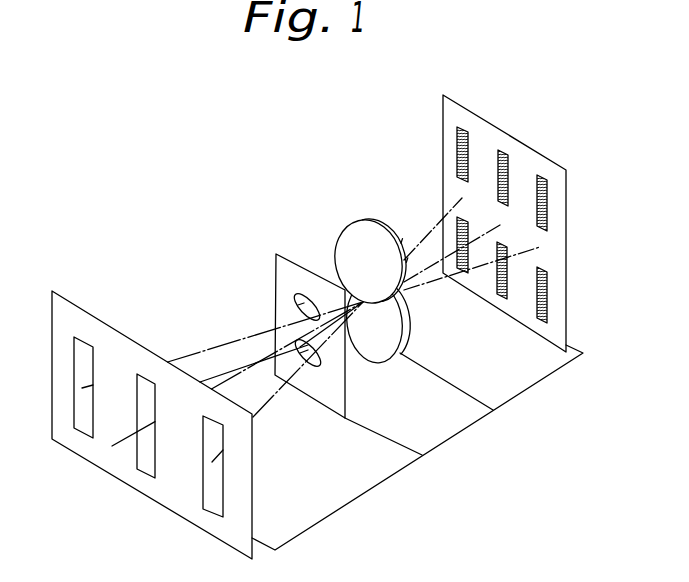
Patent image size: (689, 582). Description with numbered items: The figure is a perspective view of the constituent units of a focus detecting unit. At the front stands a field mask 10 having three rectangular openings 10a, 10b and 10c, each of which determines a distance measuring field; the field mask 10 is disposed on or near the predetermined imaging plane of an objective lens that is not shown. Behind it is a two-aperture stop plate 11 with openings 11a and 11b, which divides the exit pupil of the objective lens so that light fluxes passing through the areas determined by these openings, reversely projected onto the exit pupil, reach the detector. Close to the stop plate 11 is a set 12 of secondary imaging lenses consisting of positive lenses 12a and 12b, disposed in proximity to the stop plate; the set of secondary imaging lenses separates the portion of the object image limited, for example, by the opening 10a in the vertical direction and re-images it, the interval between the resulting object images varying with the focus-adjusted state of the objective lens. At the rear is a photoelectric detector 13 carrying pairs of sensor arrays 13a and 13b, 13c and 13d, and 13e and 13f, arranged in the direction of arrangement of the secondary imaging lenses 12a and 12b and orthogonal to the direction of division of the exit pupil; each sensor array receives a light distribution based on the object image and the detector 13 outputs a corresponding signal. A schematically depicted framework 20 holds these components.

The field mask 10 is at (192, 432).
The rectangular opening 10a is at (85, 437).
The rectangular opening 10b is at (143, 475).
The rectangular opening 10c is at (210, 515).
The two-aperture stop plate 11 is at (275, 345).
The opening 11a is at (295, 297).
The opening 11b is at (292, 346).
The set of secondary imaging lenses 12 is at (327, 260).
The positive lens 12a is at (348, 238).
The positive lens 12b is at (345, 292).
The photoelectric detector 13 is at (512, 228).
The sensor array 13a is at (460, 127).
The sensor array 13b is at (456, 273).
The sensor array 13c is at (502, 150).
The sensor array 13d is at (500, 298).
The sensor array 13e is at (539, 177).
The sensor array 13f is at (539, 321).
The framework 20 is at (572, 360).